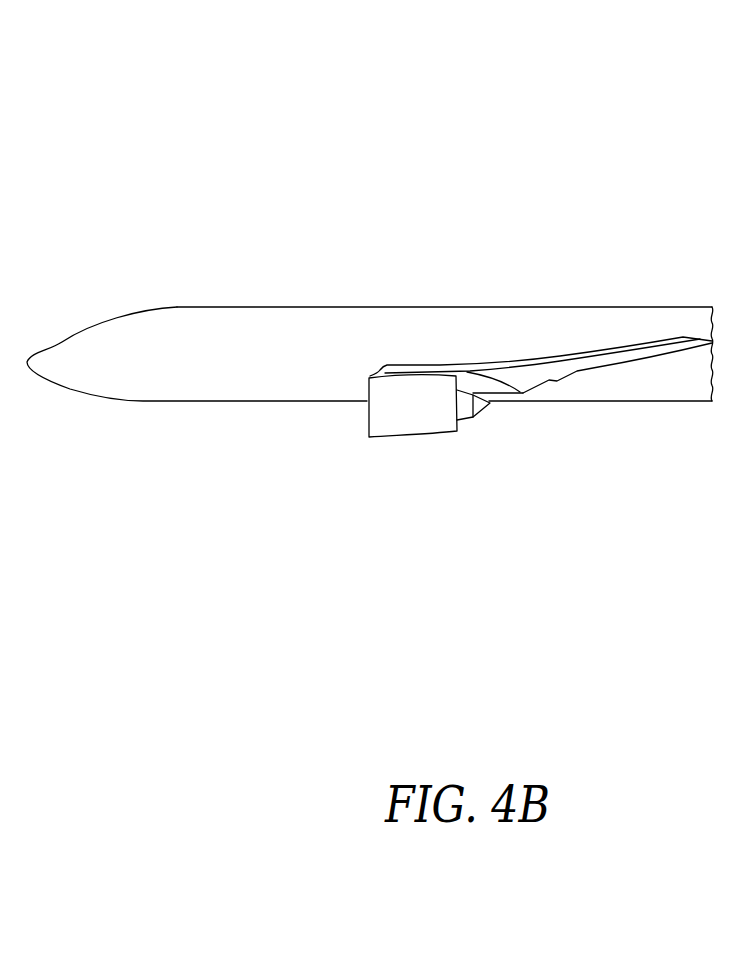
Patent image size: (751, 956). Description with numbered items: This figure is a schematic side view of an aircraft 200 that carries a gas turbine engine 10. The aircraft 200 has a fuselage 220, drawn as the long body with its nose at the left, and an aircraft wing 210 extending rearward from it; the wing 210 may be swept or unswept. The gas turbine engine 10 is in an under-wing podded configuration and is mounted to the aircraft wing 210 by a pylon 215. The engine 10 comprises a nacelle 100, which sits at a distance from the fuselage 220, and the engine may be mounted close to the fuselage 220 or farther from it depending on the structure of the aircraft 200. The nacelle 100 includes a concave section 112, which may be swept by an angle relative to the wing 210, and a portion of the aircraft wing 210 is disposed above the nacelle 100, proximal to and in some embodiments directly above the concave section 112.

The aircraft 200 is at (384, 301).
The fuselage 220 is at (192, 401).
The aircraft wing 210 is at (520, 362).
The pylon 215 is at (508, 385).
The gas turbine engine 10 is at (394, 379).
The nacelle 100 is at (429, 375).
The concave section 112 is at (440, 377).